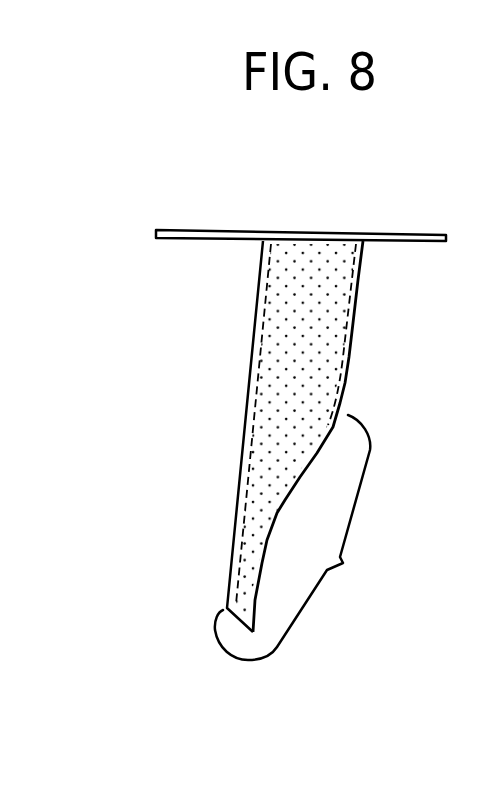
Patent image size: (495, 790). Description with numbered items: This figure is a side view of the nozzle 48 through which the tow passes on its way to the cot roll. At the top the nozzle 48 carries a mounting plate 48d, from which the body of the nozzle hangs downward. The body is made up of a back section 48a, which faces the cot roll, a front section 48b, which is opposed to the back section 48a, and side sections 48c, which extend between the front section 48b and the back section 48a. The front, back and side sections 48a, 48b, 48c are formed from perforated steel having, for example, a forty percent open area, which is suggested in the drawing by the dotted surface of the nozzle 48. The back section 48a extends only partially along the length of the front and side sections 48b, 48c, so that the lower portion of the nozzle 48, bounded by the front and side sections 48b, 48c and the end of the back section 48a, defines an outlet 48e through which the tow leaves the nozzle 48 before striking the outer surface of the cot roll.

The nozzle 48 is at (328, 302).
The back section 48a is at (348, 362).
The front section 48b is at (235, 510).
The side sections 48c is at (267, 383).
The mounting plate 48d is at (402, 235).
The outlet 48e is at (307, 537).